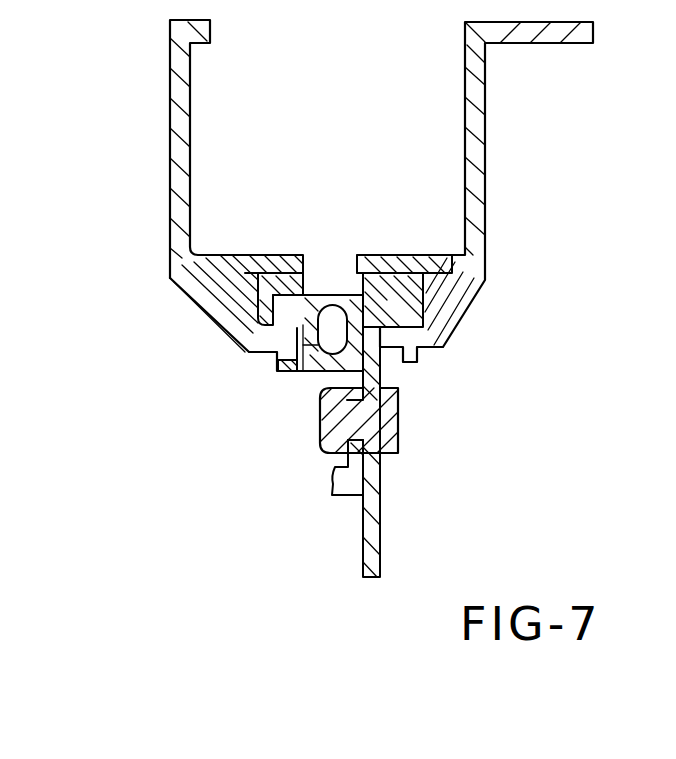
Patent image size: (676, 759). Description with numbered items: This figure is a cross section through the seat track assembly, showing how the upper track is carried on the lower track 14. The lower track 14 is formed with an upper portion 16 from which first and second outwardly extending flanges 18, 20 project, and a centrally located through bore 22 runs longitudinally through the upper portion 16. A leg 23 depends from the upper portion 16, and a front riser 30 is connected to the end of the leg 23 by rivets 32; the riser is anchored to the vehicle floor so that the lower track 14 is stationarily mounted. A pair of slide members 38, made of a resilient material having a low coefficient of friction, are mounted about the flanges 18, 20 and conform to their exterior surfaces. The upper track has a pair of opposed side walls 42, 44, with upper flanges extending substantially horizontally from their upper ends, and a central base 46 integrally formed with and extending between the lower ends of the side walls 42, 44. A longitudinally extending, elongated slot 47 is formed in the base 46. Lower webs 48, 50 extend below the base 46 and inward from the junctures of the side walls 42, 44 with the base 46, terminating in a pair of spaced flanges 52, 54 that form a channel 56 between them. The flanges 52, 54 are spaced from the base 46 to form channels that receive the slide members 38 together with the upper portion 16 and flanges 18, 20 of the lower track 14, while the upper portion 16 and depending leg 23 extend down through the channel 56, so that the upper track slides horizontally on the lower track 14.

The lower track 14 is at (311, 392).
The upper portion 16 is at (365, 377).
The first outwardly extending flange 18 is at (440, 297).
The second outwardly extending flange 20 is at (257, 298).
The through bore 22 is at (275, 358).
The leg 23 is at (336, 469).
The front riser 30 is at (376, 552).
The rivets 32 is at (392, 426).
The slide members 38 is at (242, 255).
The side wall 42 is at (172, 54).
The side wall 44 is at (468, 90).
The central base 46 is at (357, 255).
The elongated slot 47 is at (313, 258).
The lower web 48 is at (217, 320).
The lower web 50 is at (450, 318).
The flange 52 is at (302, 368).
The flange 54 is at (413, 355).
The channel 56 is at (303, 378).